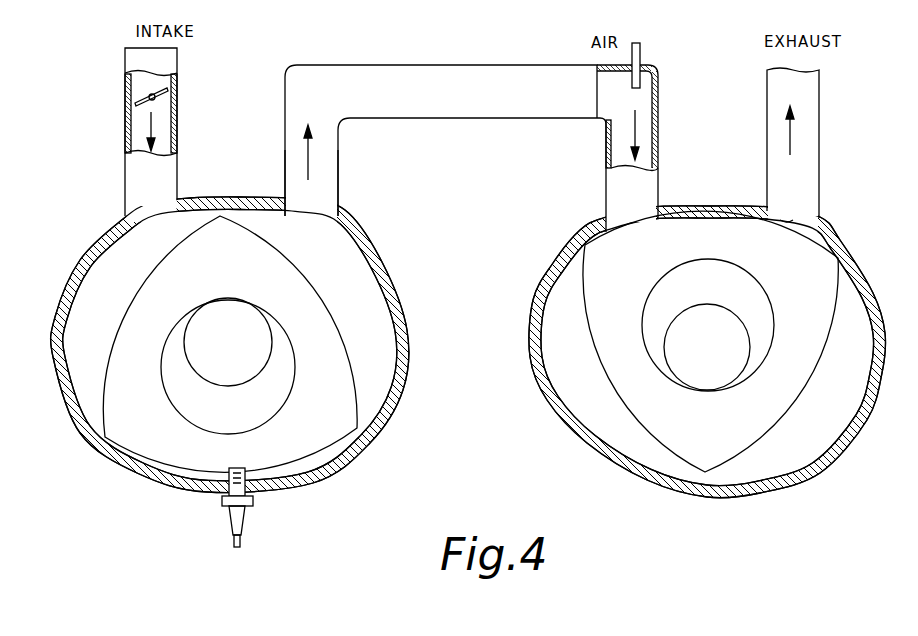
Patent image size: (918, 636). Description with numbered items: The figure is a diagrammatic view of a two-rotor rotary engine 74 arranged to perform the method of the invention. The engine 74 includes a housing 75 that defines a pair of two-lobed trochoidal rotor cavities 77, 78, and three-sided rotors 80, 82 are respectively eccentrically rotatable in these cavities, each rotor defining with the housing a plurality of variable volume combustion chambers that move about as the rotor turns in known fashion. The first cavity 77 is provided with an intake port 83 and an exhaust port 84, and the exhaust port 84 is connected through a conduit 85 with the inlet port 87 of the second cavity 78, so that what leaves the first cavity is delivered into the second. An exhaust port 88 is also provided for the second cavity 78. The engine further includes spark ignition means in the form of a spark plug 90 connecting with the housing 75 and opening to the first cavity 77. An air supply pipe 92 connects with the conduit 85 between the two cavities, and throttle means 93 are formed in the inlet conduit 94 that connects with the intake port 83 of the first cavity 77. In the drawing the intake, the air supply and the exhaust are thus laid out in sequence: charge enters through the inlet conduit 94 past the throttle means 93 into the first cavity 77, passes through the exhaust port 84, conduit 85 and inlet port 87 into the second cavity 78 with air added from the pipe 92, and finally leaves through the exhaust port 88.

The two-rotor rotary engine 74 is at (822, 221).
The housing 75 is at (455, 324).
The rotor cavity 77 is at (100, 290).
The rotor cavity 78 is at (843, 288).
The rotor 80 is at (320, 360).
The rotor 82 is at (778, 388).
The intake port 83 is at (146, 224).
The exhaust port 84 is at (303, 226).
The conduit 85 is at (471, 130).
The inlet port 87 is at (630, 228).
The exhaust port 88 is at (787, 222).
The spark plug 90 is at (248, 516).
The air supply pipe 92 is at (641, 62).
The throttle means 93 is at (138, 101).
The inlet conduit 94 is at (178, 78).